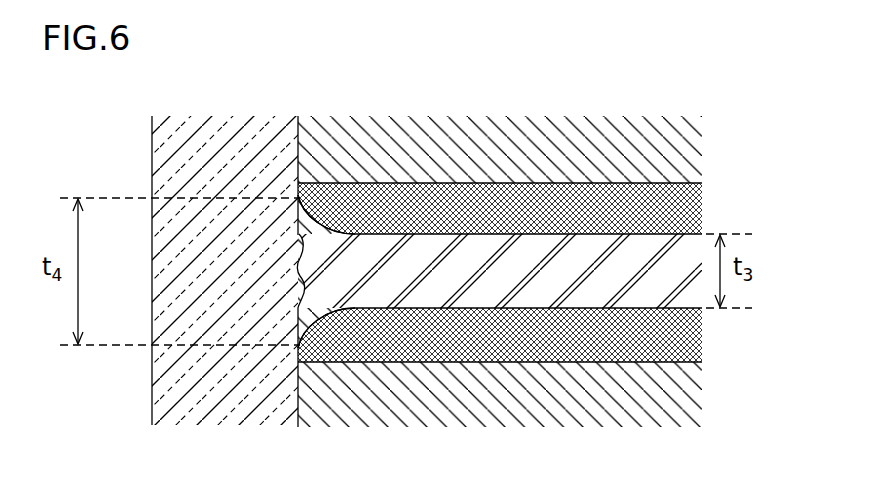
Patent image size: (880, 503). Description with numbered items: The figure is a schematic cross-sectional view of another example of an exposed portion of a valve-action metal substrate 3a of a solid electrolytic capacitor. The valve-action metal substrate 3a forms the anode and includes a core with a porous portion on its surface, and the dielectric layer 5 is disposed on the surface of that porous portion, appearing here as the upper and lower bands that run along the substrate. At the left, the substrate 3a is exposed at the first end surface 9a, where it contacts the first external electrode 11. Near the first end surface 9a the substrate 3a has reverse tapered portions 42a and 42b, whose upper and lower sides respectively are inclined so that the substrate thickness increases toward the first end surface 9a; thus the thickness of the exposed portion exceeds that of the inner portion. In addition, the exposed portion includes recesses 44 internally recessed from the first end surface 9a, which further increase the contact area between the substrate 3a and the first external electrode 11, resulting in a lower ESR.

The first external electrode 11 is at (165, 390).
The first end surface 9a is at (298, 213).
The reverse tapered portion 42a is at (306, 222).
The reverse tapered portion 42b is at (318, 350).
The dielectric layer 5 is at (452, 213).
The valve-action metal substrate 3a is at (506, 265).
The recesses 44 is at (303, 240).